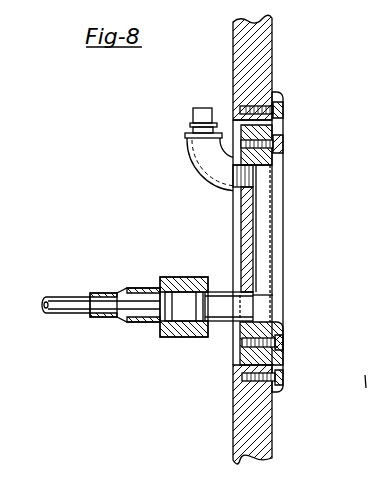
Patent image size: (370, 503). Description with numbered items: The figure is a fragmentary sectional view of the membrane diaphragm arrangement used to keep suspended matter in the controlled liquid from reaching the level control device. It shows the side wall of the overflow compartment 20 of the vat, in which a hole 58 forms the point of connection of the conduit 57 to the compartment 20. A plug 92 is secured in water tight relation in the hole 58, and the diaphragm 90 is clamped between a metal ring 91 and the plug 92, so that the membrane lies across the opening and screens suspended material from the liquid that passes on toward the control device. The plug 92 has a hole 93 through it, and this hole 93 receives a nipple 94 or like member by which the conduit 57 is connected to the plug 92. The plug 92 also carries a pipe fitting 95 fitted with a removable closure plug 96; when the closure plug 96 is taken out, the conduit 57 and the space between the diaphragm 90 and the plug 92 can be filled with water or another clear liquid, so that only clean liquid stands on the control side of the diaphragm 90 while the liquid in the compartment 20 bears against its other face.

The overflow compartment 20 is at (265, 421).
The conduit 57 is at (63, 314).
The hole 58 is at (242, 362).
The diaphragm 90 is at (272, 210).
The metal ring 91 is at (283, 157).
The plug 92 is at (286, 118).
The hole 93 is at (245, 300).
The nipple 94 is at (220, 292).
The pipe fitting 95 is at (203, 176).
The removable closure plug 96 is at (190, 128).